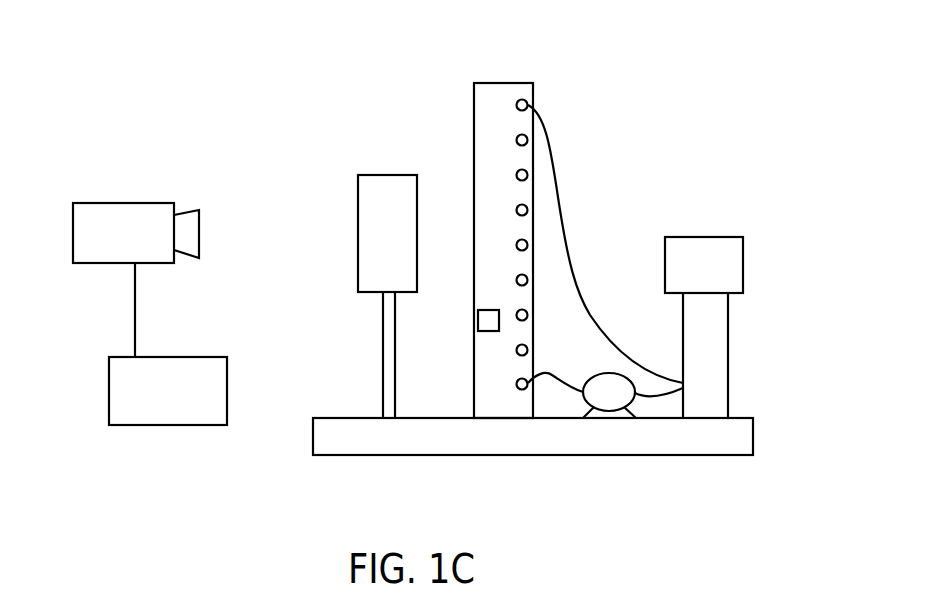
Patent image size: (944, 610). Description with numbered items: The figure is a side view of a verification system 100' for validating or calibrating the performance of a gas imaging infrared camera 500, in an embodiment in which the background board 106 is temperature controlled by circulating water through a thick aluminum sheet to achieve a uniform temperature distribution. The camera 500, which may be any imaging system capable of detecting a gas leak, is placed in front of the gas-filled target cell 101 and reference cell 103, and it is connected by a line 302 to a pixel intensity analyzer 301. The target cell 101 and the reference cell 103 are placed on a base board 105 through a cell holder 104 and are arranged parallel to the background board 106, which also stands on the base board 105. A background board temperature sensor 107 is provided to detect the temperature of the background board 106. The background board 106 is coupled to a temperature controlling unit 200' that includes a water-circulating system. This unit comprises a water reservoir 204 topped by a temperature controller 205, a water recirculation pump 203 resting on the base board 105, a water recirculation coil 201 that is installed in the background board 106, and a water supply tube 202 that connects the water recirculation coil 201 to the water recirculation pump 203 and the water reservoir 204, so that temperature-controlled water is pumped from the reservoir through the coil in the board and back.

The verification system 100' is at (251, 48).
The camera 500 is at (98, 265).
The connection line 302 is at (133, 318).
The pixel intensity analyzer 301 is at (168, 425).
The target cell 101 is at (387, 233).
The reference cell 103 is at (357, 275).
The cell holder 104 is at (383, 362).
The base board 105 is at (440, 445).
The background board 106 is at (500, 83).
The background board temperature sensor 107 is at (482, 320).
The water recirculation coil 201 is at (533, 173).
The water supply tube 202 is at (569, 232).
The water recirculation pump 203 is at (610, 400).
The water reservoir 204 is at (710, 350).
The temperature controller 205 is at (720, 250).
The temperature controlling unit 200' is at (864, 306).